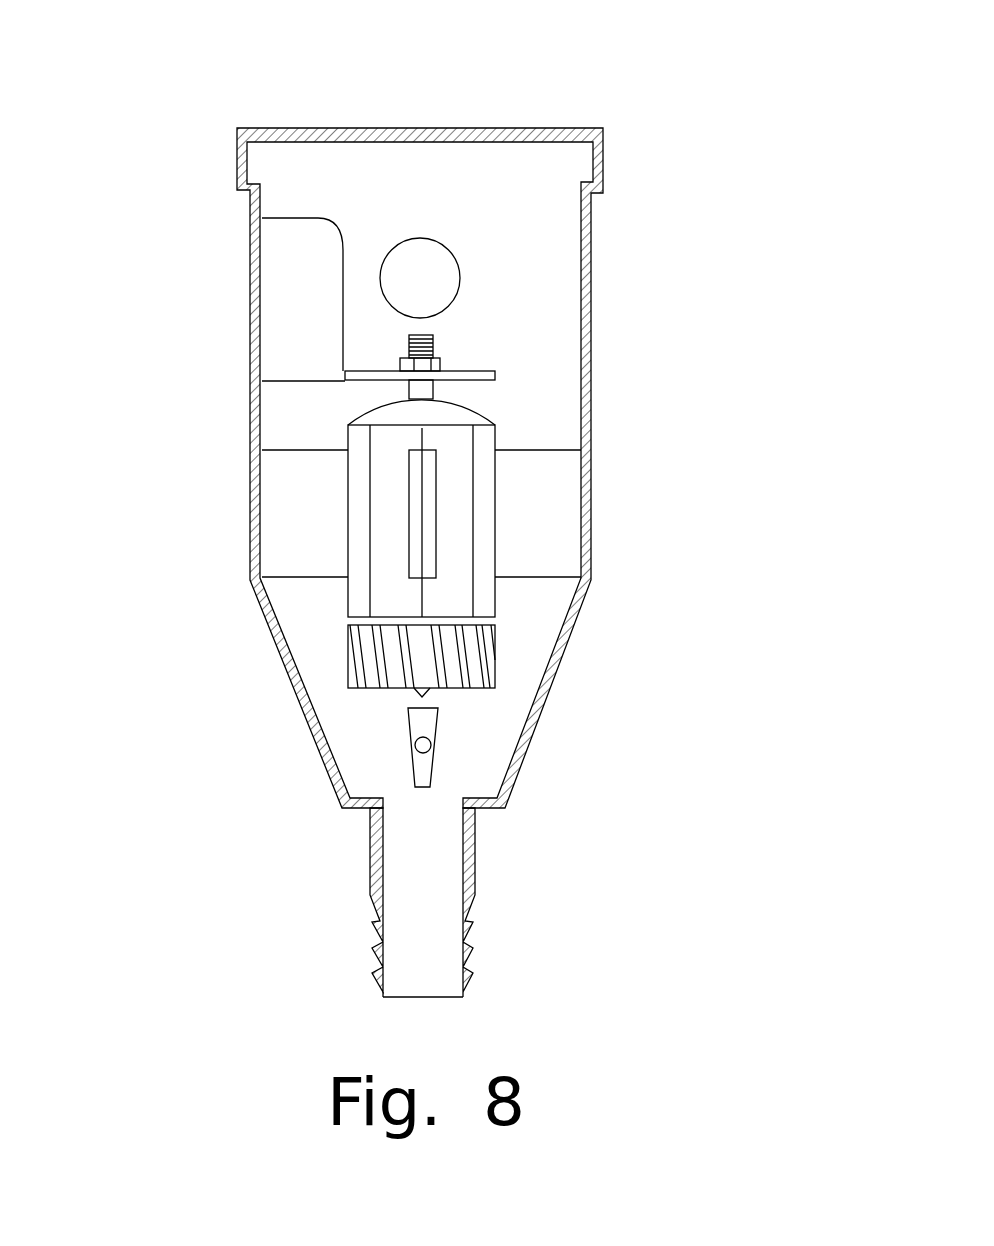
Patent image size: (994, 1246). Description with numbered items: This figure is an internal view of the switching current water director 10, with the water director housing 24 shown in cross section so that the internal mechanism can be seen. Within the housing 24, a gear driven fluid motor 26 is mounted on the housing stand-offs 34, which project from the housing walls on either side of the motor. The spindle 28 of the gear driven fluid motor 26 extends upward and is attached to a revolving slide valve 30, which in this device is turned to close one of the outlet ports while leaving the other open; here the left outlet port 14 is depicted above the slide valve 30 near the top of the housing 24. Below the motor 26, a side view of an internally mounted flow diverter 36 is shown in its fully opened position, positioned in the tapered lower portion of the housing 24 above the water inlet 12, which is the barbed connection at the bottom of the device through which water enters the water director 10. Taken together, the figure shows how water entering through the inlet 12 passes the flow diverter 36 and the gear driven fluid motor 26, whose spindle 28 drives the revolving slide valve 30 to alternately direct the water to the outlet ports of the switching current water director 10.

The switching current water director 10 is at (482, 502).
The water inlet 12 is at (468, 993).
The left outlet port 14 is at (383, 270).
The water director housing 24 is at (591, 233).
The gear driven fluid motor 26 is at (465, 480).
The spindle 28 is at (432, 337).
The revolving slide valve 30 is at (332, 226).
The housing stand-offs 34 is at (295, 507).
The flow diverter 36 is at (433, 733).